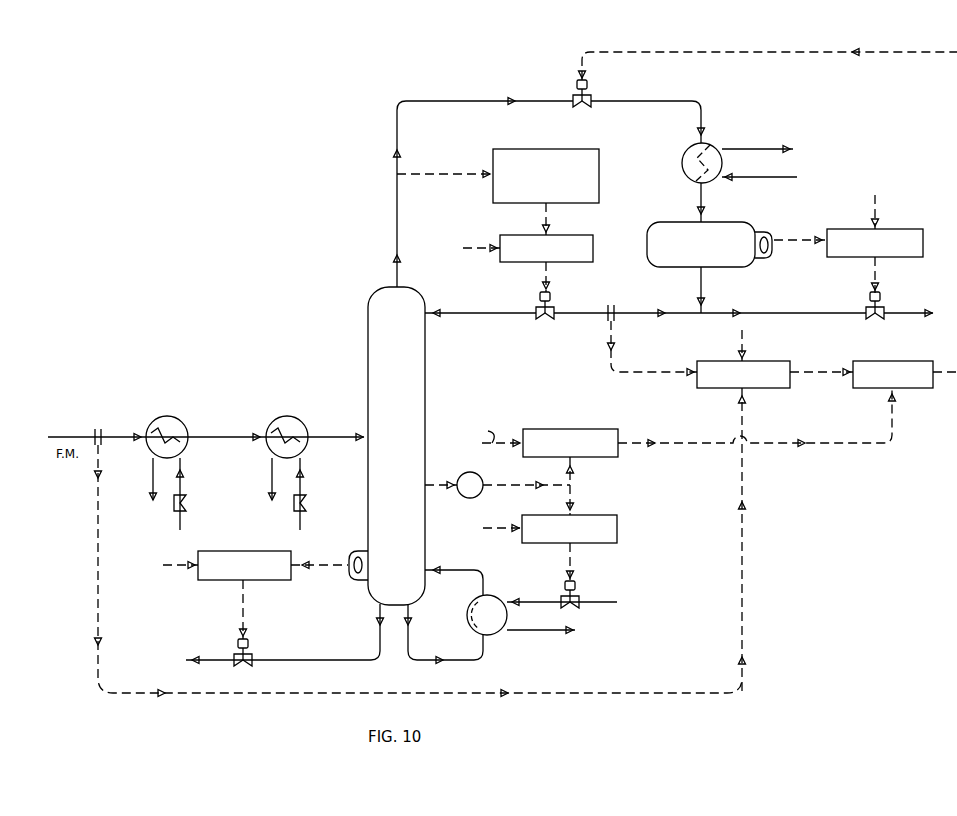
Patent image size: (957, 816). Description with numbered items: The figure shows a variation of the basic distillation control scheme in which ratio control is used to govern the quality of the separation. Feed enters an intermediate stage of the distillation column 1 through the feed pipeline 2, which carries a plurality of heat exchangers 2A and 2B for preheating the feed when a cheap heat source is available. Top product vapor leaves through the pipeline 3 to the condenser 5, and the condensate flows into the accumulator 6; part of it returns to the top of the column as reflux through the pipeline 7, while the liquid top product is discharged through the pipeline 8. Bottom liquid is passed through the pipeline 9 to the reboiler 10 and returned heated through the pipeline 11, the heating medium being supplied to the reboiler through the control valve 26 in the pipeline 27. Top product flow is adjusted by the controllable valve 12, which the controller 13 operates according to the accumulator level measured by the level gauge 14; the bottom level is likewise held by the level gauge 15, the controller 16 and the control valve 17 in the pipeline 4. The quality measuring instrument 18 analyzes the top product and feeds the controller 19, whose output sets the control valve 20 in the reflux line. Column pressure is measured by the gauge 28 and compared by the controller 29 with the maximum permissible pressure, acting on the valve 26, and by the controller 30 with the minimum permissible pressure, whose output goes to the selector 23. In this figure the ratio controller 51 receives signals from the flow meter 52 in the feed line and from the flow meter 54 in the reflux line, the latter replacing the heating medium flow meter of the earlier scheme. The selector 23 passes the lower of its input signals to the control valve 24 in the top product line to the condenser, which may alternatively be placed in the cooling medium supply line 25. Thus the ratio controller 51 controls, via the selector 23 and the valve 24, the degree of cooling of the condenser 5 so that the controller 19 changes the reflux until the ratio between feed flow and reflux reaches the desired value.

The distillation column 1 is at (401, 452).
The feed pipeline 2 is at (213, 437).
The heat exchanger 2A is at (156, 418).
The heat exchanger 2B is at (276, 418).
The top product pipeline 3 is at (397, 118).
The bottom product pipeline 4 is at (311, 660).
The condenser 5 is at (686, 152).
The accumulator 6 is at (674, 222).
The reflux pipeline 7 is at (463, 313).
The discharge pipeline 8 is at (796, 313).
The pipeline 9 is at (408, 652).
The reboiler 10 is at (470, 601).
The pipeline 11 is at (445, 570).
The controllable valve 12 is at (872, 322).
The controller 13 is at (882, 229).
The level gauge 14 is at (770, 250).
The level gauge 15 is at (348, 556).
The controller 16 is at (228, 551).
The control valve 17 is at (249, 655).
The quality measuring instrument 18 is at (516, 149).
The controller 19 is at (596, 246).
The control valve 20 is at (540, 320).
The selector 23 is at (905, 390).
The control valve 24 is at (576, 122).
The condenser cooling medium supply line 25 is at (738, 182).
The control valve 26 is at (575, 607).
The heating medium pipeline 27 is at (514, 602).
The pressure gauge 28 is at (460, 472).
The controller 29 is at (578, 515).
The controller 30 is at (578, 429).
The ratio controller 51 is at (750, 361).
The flow meter 52 is at (93, 433).
The flow meter 54 is at (613, 313).